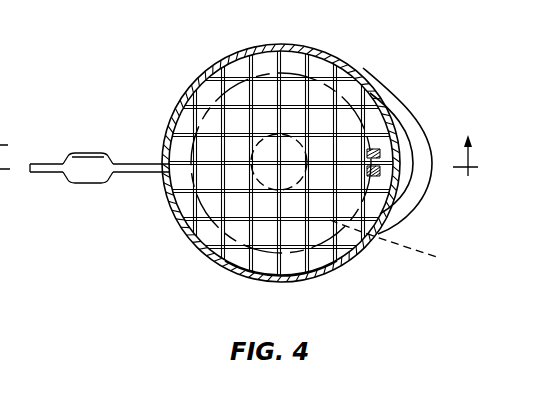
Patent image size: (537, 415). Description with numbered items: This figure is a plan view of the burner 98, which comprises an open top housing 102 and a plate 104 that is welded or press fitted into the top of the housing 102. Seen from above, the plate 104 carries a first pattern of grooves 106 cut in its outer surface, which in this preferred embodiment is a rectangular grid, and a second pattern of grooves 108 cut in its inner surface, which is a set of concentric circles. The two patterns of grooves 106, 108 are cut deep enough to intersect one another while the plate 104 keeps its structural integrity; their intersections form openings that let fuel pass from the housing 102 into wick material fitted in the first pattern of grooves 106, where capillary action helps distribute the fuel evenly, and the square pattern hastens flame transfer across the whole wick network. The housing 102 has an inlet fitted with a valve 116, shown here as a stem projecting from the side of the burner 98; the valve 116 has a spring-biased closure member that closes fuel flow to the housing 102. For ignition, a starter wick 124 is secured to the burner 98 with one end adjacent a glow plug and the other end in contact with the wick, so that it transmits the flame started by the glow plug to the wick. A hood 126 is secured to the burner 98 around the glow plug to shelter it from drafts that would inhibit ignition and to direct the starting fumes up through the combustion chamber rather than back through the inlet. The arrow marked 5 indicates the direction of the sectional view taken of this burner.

The burner 98 is at (337, 62).
The open top housing 102 is at (200, 244).
The plate 104 is at (330, 265).
The first pattern of grooves 106 is at (253, 270).
The second pattern of grooves 108 is at (440, 258).
The valve 116 is at (87, 182).
The starter wick 124 is at (375, 168).
The hood 126 is at (401, 111).
The view direction arrow 5 is at (473, 155).